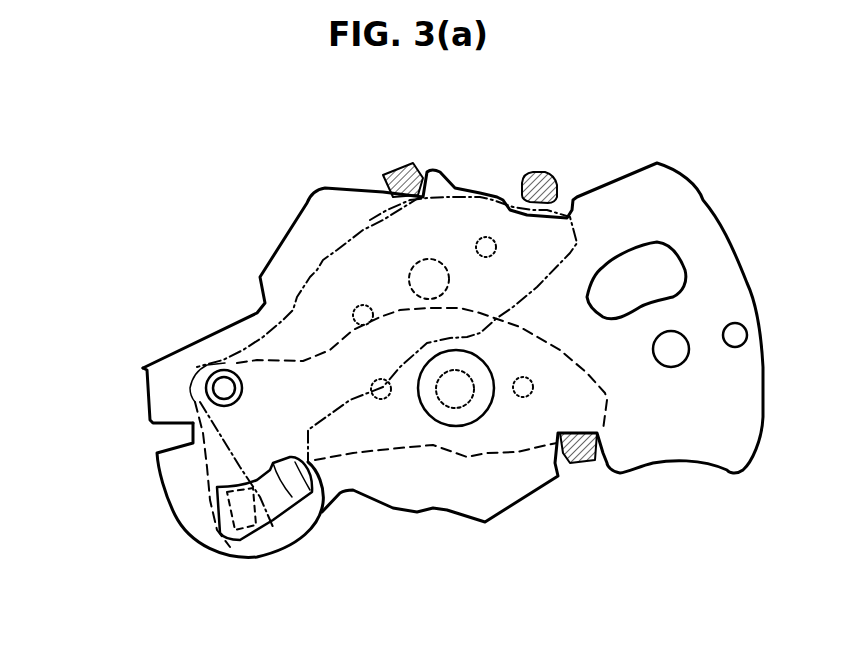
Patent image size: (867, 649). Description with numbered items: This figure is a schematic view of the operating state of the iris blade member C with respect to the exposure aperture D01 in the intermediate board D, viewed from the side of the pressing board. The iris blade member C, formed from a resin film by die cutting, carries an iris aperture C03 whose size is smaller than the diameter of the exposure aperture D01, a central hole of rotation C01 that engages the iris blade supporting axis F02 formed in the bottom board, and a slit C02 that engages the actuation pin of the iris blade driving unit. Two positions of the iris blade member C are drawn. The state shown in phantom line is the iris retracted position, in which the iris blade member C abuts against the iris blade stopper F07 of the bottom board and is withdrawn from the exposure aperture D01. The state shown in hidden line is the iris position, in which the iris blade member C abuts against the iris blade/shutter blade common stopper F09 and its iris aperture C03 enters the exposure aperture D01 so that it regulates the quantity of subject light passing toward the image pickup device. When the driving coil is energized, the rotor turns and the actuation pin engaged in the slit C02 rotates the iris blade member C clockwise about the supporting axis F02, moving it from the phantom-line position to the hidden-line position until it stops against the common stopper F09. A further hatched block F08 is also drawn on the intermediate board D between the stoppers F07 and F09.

The intermediate board D is at (141, 369).
The exposure aperture D01 is at (462, 418).
The iris blade member C is at (334, 295).
The central hole of rotation C01 is at (213, 372).
The slit C02 is at (303, 497).
The iris aperture C03 is at (433, 258).
The iris blade supporting axis F02 is at (205, 392).
The iris blade stopper F07 is at (400, 175).
The fixing block F08 is at (545, 172).
The iris blade/shutter blade common stopper F09 is at (572, 464).